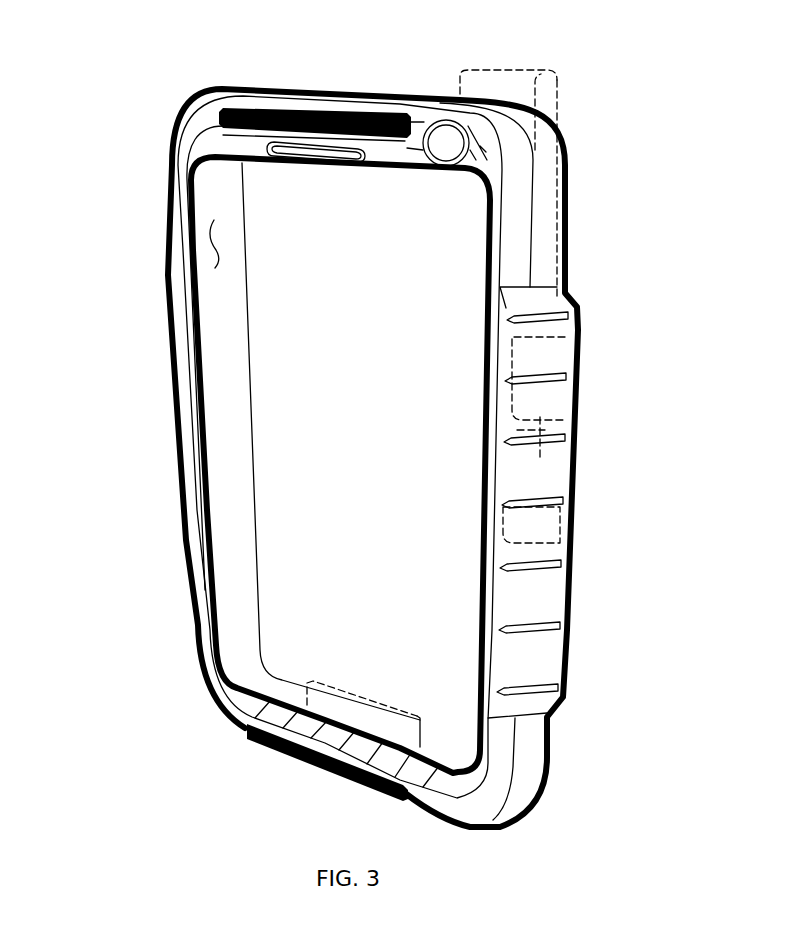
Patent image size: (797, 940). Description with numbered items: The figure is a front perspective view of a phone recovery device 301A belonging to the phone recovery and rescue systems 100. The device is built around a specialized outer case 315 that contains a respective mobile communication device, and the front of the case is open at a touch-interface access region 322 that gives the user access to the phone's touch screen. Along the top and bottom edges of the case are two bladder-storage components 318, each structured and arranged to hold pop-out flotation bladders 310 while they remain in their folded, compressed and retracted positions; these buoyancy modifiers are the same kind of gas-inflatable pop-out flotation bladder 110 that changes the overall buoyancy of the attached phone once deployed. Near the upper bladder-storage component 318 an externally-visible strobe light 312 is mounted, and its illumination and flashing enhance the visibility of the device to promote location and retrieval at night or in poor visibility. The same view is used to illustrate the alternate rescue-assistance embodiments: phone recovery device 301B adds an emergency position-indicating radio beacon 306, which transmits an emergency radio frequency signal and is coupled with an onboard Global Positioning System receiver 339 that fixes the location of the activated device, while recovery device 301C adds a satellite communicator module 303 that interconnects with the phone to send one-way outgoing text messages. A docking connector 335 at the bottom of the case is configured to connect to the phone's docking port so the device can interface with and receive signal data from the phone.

The phone recovery and rescue systems 100 is at (285, 33).
The pop-out flotation bladder 110 is at (733, 0).
The phone recovery device 301A is at (118, 174).
The phone recovery device 301B is at (603, 78).
The recovery device 301C is at (603, 130).
The satellite communicator module 303 is at (573, 167).
The emergency position-indicating radio beacon 306 is at (603, 100).
The pop-out flotation bladders 310 is at (378, 140).
The strobe light 312 is at (446, 162).
The outer case 315 is at (548, 695).
The bladder-storage component 318 is at (317, 110).
The touch-interface access region 322 is at (213, 246).
The docking connector 335 is at (342, 692).
The Global Positioning System (GPS) receiver 339 is at (567, 460).